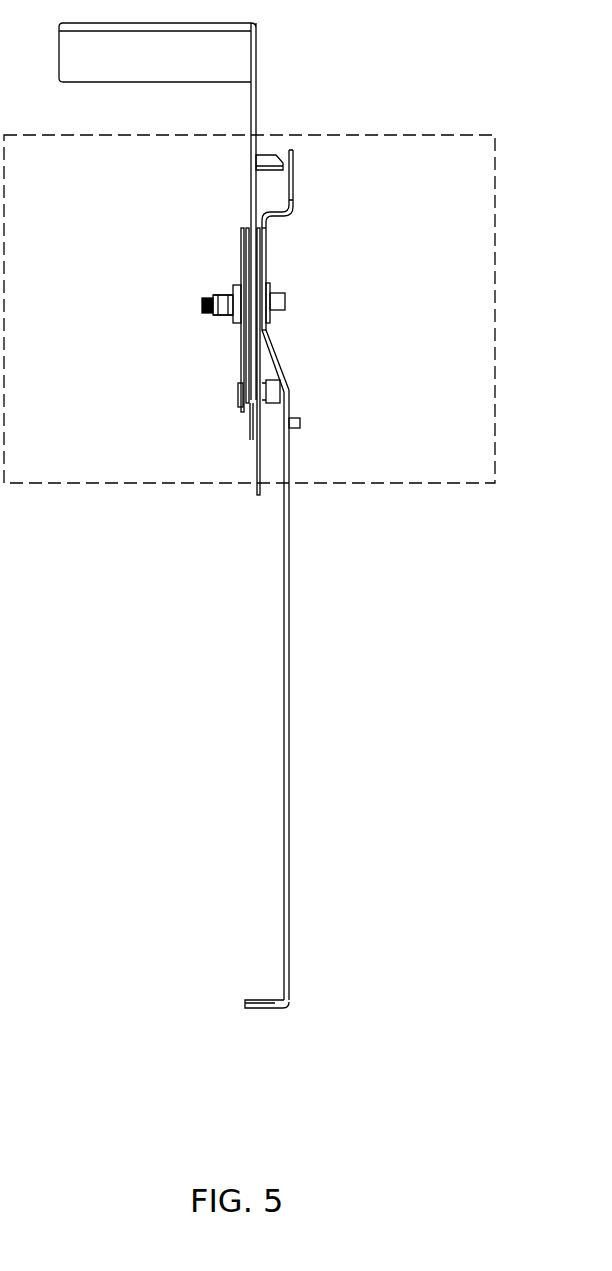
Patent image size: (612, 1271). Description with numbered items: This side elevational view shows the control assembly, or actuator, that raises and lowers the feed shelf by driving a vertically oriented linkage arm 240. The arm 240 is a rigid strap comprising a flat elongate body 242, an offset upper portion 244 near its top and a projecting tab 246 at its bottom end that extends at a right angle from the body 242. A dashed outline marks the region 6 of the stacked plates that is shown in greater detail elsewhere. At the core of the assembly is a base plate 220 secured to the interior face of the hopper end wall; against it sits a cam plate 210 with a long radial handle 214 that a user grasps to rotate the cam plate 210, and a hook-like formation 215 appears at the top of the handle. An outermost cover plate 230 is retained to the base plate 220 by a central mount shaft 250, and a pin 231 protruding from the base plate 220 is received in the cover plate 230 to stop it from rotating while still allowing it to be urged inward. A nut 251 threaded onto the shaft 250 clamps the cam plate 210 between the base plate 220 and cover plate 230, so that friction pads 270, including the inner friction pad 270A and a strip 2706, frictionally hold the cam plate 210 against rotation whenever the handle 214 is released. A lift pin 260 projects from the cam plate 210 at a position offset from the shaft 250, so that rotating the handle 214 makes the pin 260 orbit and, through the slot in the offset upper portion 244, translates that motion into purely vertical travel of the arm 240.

The region shown in FIG. 6 is at (258, 309).
The handle 214 is at (252, 100).
The hook 215 is at (270, 160).
The base plate 220 is at (294, 186).
The strip 2706 is at (243, 232).
The cam plate 210 is at (250, 272).
The friction pad 270 is at (258, 495).
The inner friction pad 270A is at (262, 243).
The central mount shaft 250 is at (194, 309).
The nut 251 is at (222, 318).
The lift pin 260 is at (287, 302).
The cover plate 230 is at (240, 375).
The pin 231 is at (252, 438).
The linkage arm 240 is at (279, 669).
The elongate body 242 is at (290, 648).
The offset upper portion 244 is at (283, 385).
The projecting tab 246 is at (262, 1000).